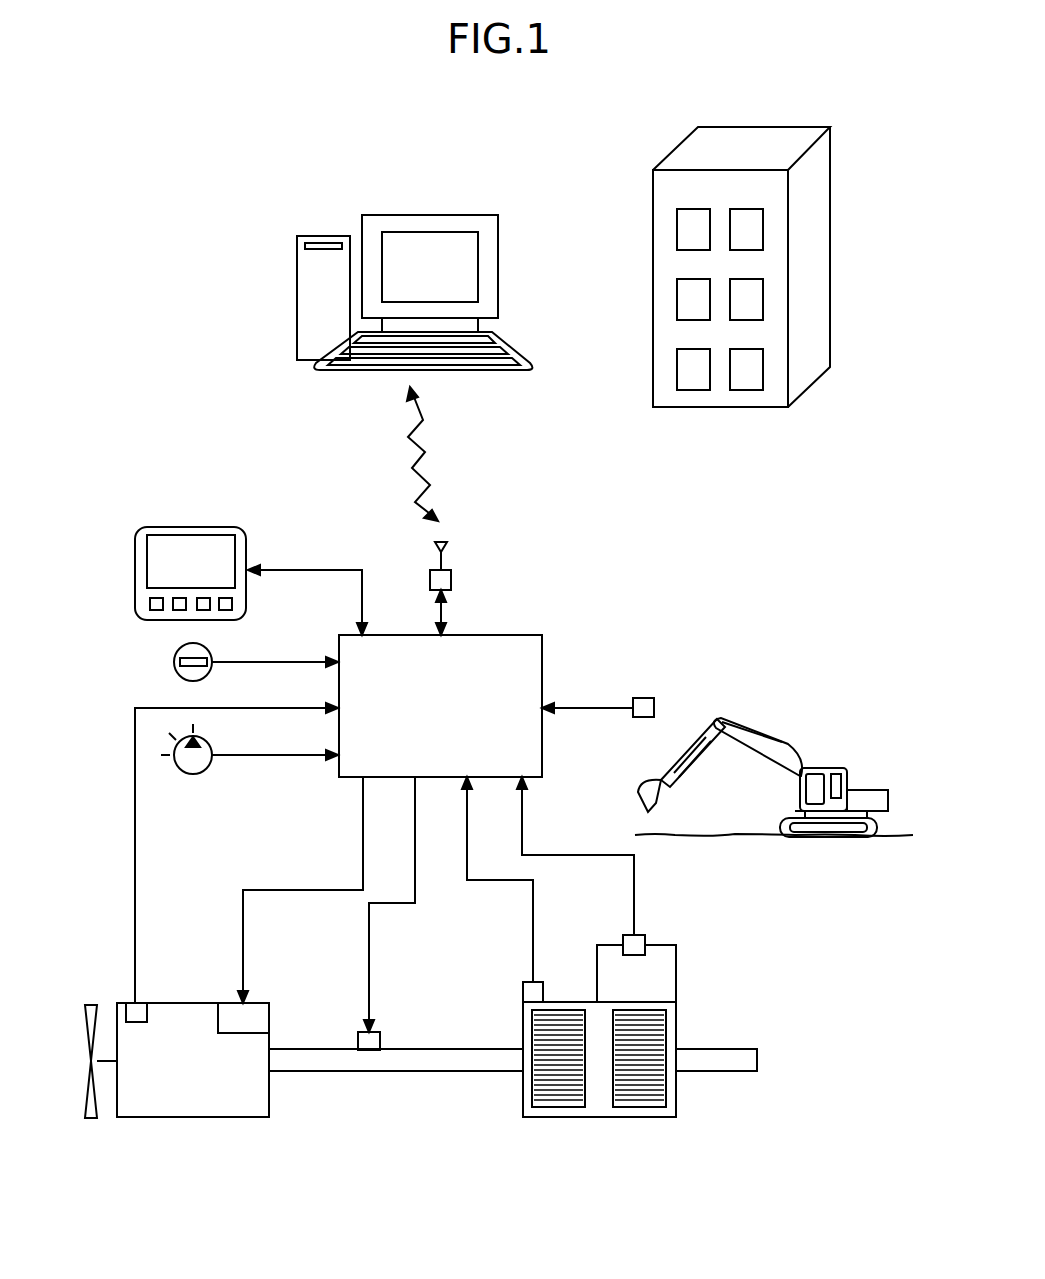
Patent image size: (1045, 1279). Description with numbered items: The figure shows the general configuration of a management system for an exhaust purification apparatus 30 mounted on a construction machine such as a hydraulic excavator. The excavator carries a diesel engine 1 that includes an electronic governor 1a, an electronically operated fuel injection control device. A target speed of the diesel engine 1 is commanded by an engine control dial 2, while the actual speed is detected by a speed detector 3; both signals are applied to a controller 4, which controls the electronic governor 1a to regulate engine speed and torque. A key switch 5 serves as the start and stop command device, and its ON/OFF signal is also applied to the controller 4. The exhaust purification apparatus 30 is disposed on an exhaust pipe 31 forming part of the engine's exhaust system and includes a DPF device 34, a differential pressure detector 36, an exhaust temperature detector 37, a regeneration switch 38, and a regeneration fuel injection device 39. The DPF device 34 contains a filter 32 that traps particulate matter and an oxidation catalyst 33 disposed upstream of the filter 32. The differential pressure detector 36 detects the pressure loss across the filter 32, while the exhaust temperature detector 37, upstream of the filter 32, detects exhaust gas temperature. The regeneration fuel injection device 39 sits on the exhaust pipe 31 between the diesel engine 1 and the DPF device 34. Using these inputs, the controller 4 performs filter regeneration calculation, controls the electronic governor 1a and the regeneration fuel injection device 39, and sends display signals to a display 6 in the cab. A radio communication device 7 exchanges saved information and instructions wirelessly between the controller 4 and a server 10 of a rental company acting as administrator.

The diesel engine 1 is at (224, 987).
The electronic governor 1a is at (257, 1003).
The engine control dial 2 is at (193, 775).
The speed detector 3 is at (139, 1003).
The controller 4 is at (503, 635).
The key switch 5 is at (174, 663).
The display 6 is at (190, 527).
The radio communication device 7 is at (452, 578).
The server 10 is at (308, 199).
The exhaust purification apparatus 30 is at (513, 1100).
The exhaust pipe 31 is at (392, 1072).
The filter 32 is at (640, 1108).
The oxidation catalyst 33 is at (555, 1108).
The DPF device 34 is at (677, 1022).
The differential pressure detector 36 is at (646, 940).
The exhaust temperature detector 37 is at (523, 992).
The regeneration switch 38 is at (646, 698).
The regeneration fuel injection device 39 is at (381, 1034).